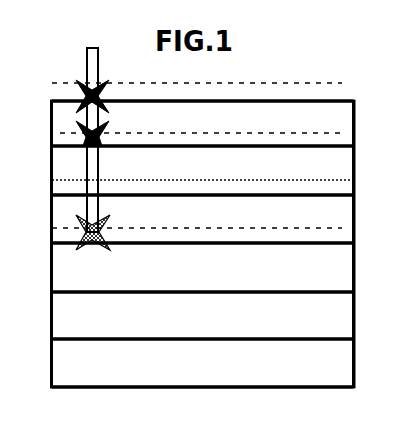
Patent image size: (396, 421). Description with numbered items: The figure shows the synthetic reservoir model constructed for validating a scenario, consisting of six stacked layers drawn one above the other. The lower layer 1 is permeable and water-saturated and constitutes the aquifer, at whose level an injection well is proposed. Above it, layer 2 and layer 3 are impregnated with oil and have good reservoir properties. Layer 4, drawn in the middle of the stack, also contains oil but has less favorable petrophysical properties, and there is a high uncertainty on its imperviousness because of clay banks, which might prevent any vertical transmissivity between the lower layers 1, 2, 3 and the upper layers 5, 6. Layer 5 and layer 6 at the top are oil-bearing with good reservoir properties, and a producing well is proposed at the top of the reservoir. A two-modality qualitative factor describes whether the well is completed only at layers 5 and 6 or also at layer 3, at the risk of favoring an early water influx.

The lower layer 1 is at (202, 363).
The layer 2 is at (202, 315).
The layer 3 is at (202, 267).
The layer 4 is at (202, 219).
The layer 5 is at (202, 170).
The layer 6 is at (202, 123).